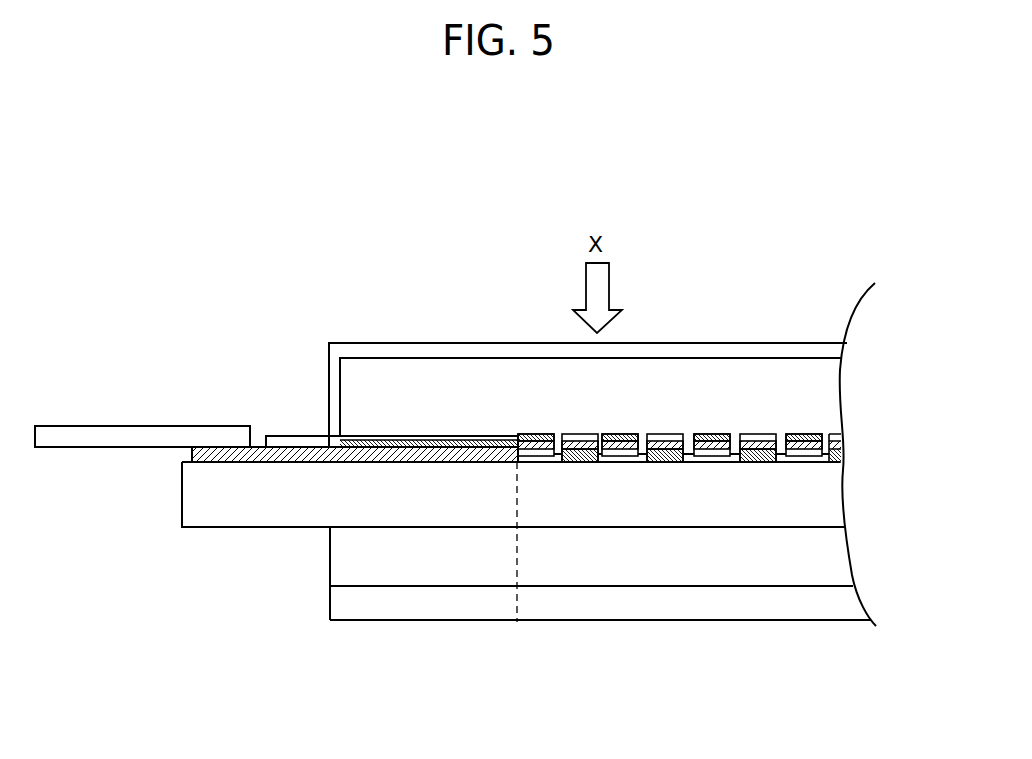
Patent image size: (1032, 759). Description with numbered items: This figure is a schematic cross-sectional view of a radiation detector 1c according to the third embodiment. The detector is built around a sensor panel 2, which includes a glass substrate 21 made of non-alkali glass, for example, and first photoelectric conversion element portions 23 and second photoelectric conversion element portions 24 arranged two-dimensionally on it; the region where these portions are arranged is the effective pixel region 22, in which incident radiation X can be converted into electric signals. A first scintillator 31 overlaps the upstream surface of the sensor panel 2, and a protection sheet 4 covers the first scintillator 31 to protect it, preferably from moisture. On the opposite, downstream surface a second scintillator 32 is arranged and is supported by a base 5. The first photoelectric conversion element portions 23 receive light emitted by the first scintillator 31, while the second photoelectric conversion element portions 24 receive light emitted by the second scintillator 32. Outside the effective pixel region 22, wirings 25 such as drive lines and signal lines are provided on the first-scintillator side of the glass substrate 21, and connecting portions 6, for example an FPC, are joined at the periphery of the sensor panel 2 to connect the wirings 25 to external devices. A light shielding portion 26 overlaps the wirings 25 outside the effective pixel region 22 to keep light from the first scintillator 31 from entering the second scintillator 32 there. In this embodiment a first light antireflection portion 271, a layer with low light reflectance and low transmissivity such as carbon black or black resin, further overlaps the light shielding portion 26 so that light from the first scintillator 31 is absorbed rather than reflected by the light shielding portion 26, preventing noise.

The radiation detector 1c is at (758, 224).
The sensor panel 2 is at (138, 497).
The protection sheet 4 is at (758, 347).
The base 5 is at (478, 620).
The connecting portions 6 is at (183, 425).
The glass substrate 21 is at (248, 528).
The effective pixel region 22 is at (873, 632).
The first photoelectric conversion element portions 23 is at (565, 429).
The second photoelectric conversion element portions 24 is at (618, 432).
The wirings 25 is at (320, 462).
The light shielding portion 26 is at (485, 445).
The first scintillator 31 is at (820, 396).
The second scintillator 32 is at (836, 556).
The first light antireflection portion 271 is at (413, 436).